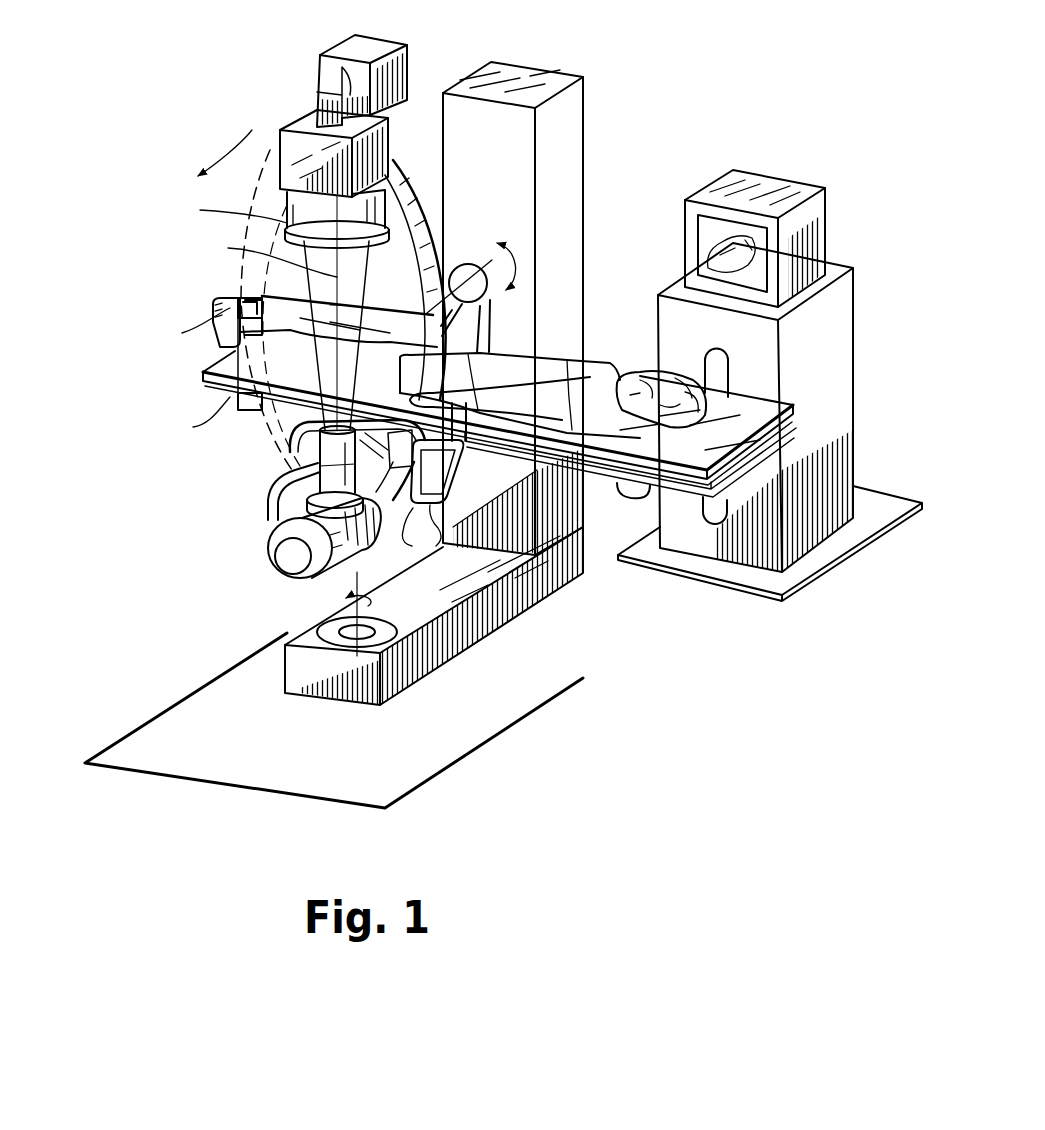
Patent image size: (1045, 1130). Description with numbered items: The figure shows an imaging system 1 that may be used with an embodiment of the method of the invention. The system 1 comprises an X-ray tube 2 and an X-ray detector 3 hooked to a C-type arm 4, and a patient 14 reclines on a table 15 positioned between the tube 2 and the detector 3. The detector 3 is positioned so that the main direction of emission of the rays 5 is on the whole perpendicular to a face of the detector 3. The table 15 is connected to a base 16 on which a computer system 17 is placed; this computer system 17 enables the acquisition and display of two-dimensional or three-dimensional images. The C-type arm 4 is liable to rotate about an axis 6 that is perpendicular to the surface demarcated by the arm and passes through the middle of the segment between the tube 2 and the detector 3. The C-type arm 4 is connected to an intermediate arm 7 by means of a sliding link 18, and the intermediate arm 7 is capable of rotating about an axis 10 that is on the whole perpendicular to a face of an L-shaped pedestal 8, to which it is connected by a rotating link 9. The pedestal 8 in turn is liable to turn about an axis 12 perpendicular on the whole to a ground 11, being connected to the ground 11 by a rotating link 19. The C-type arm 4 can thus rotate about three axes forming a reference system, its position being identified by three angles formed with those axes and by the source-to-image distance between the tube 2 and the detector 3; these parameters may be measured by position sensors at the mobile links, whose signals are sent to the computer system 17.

The imaging system 1 is at (699, 56).
The X-ray tube 2 is at (292, 560).
The X-ray detector 3 is at (303, 220).
The C-type arm 4 is at (395, 170).
The rays 5 is at (360, 268).
The axis 6 is at (247, 297).
The intermediate arm 7 is at (420, 515).
The L-shaped pedestal 8 is at (567, 134).
The rotating link 9 is at (463, 262).
The axis 10 is at (497, 300).
The ground 11 is at (223, 738).
The axis 12 is at (343, 591).
The patient 14 is at (607, 372).
The table 15 is at (607, 480).
The base 16 is at (833, 322).
The computer system 17 is at (813, 243).
The sliding link 18 is at (447, 486).
The rotating link 19 is at (384, 638).